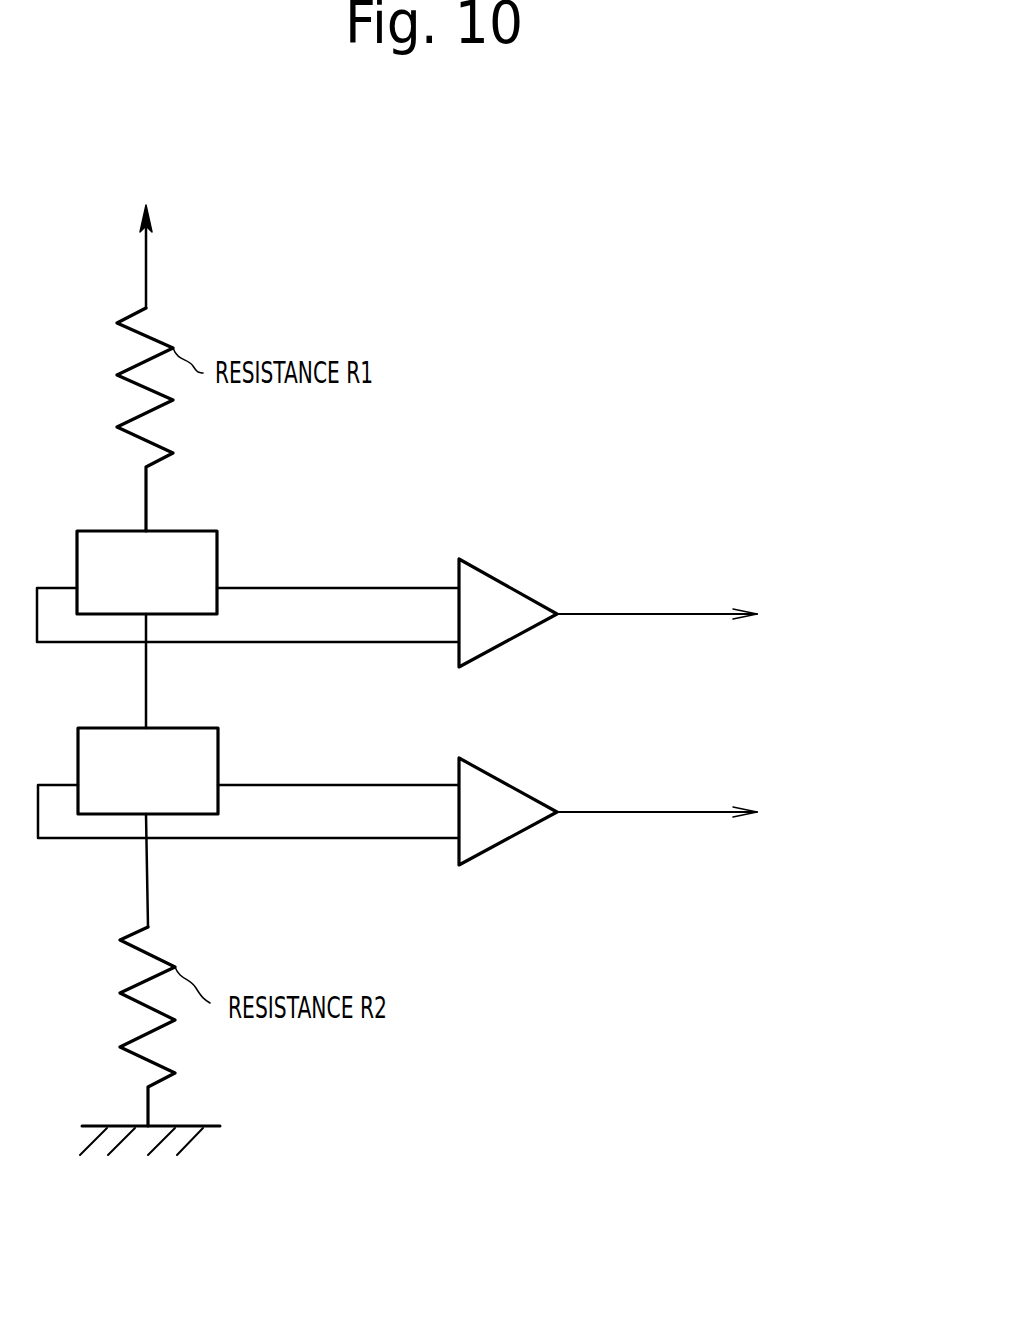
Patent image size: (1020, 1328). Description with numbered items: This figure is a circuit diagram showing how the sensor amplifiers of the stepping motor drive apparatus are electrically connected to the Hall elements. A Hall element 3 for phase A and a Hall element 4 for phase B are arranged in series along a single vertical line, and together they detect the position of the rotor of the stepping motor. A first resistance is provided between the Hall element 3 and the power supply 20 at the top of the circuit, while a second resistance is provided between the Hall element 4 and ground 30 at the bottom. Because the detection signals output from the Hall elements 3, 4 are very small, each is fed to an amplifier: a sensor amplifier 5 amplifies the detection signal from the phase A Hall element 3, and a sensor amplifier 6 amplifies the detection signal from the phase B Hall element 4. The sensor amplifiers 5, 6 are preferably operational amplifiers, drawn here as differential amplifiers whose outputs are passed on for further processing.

The power supply 20 is at (263, 252).
The Hall element 3 is at (190, 530).
The Hall element 4 is at (192, 727).
The sensor amplifier 5 is at (535, 598).
The sensor amplifier 6 is at (528, 790).
The ground 30 is at (203, 1126).